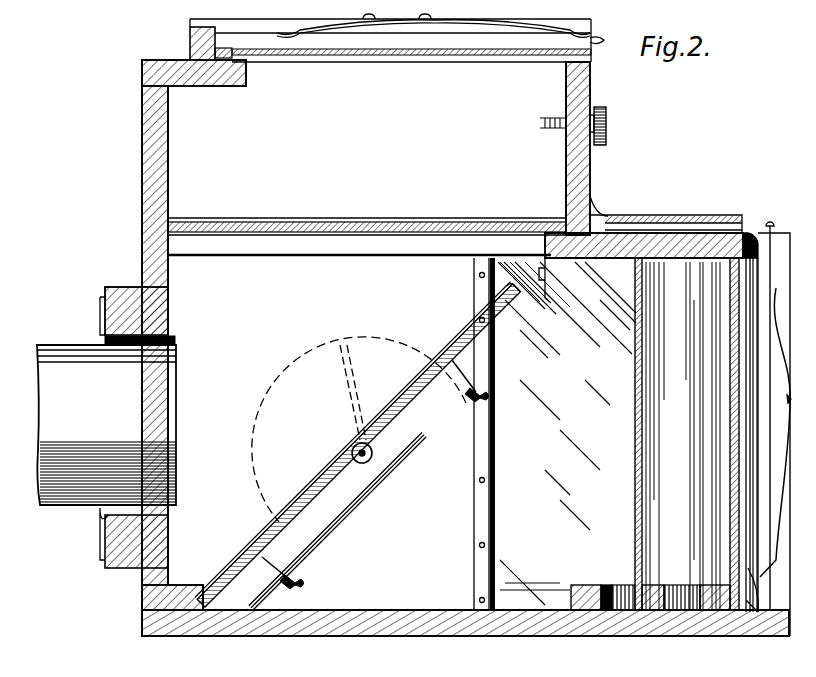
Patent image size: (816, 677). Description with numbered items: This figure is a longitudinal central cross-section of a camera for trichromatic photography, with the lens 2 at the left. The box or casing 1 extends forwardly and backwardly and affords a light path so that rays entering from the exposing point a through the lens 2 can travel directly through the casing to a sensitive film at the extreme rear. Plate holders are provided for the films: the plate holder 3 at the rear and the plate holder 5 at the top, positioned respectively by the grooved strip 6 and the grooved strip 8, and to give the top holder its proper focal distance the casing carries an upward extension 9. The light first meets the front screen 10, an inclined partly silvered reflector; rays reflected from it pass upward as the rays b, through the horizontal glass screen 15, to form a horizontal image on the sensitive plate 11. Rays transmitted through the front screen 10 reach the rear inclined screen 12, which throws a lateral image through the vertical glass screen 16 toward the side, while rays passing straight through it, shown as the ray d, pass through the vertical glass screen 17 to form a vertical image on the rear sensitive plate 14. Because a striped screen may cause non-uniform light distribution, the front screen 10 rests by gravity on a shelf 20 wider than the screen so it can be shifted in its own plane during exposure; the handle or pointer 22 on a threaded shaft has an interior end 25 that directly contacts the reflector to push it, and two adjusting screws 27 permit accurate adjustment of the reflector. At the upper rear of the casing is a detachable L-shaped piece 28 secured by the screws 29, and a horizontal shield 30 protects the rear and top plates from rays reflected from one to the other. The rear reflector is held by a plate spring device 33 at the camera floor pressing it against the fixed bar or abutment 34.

The box or casing 1 is at (142, 176).
The lens 2 is at (62, 345).
The plate holder 3 is at (755, 240).
The plate holder 5 is at (200, 57).
The grooved strip 6 is at (781, 240).
The grooved strip 8 is at (593, 31).
The upward extension 9 is at (466, 145).
The front screen 10 is at (466, 346).
The sensitive film or plate 11 is at (362, 56).
The rear inclined screen 12 is at (668, 362).
The rear sensitive plate 14 is at (748, 570).
The screen 15 is at (312, 222).
The screen 16 is at (562, 406).
The screen 17 is at (735, 392).
The shelf 20 is at (383, 460).
The handle or pointer 22 is at (345, 388).
The interior end 25 is at (370, 462).
The adjusting screw 27 is at (302, 584).
The L-shaped piece 28 is at (580, 177).
The screw 29 is at (607, 125).
The horizontal shield 30 is at (553, 298).
The plate spring device 33 is at (618, 612).
The fixed bar or abutment 34 is at (657, 612).
The exposing point a is at (520, 425).
The rays b is at (390, 425).
The ray d is at (190, 434).